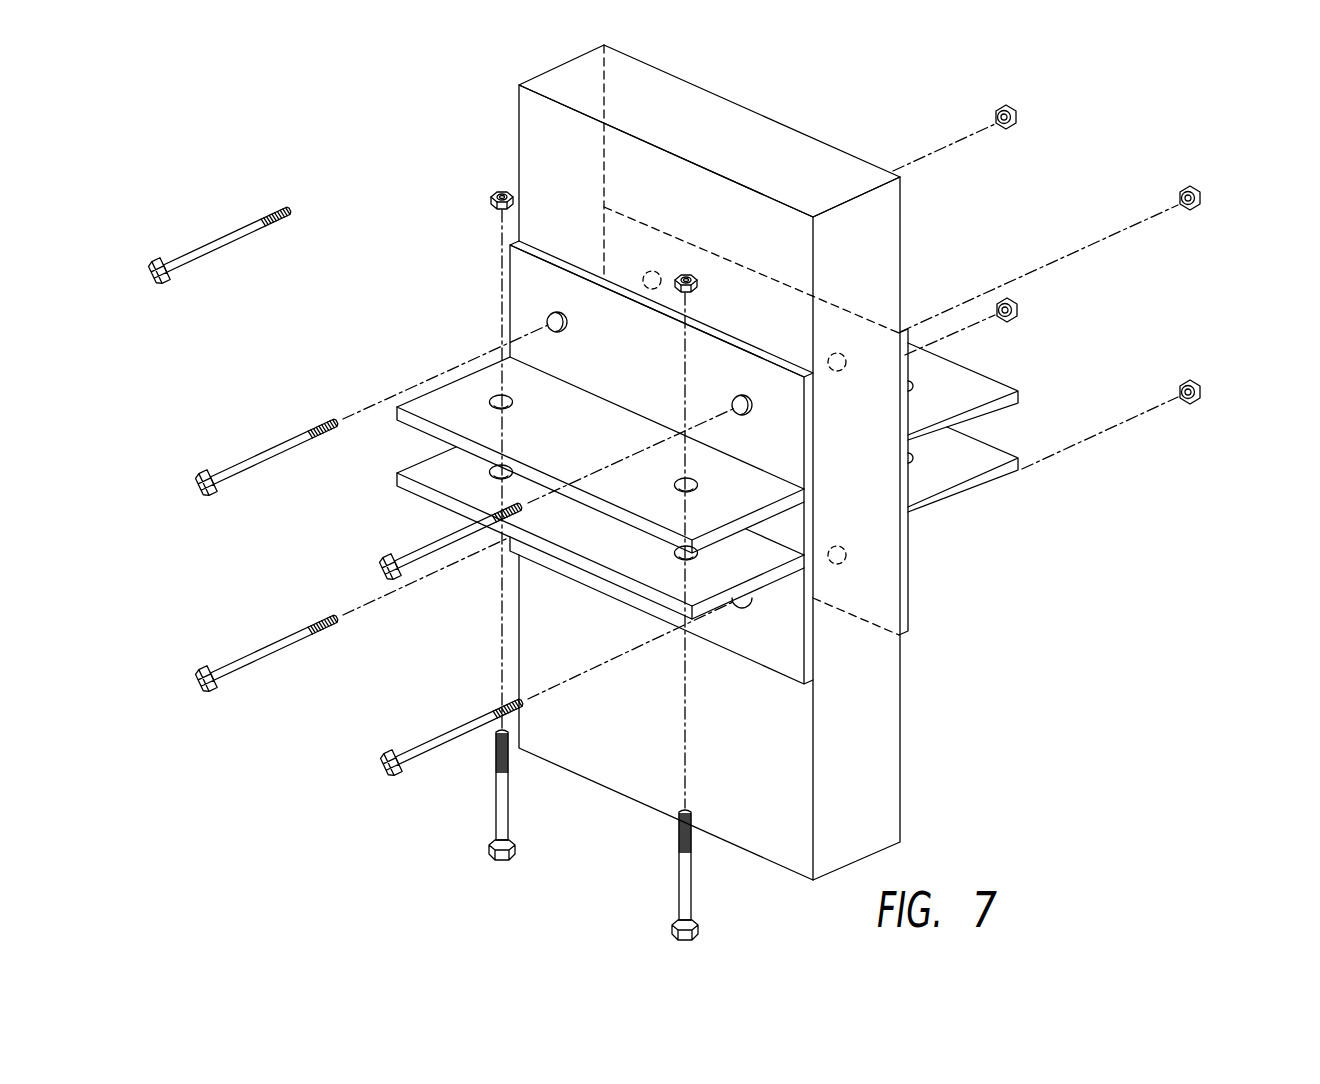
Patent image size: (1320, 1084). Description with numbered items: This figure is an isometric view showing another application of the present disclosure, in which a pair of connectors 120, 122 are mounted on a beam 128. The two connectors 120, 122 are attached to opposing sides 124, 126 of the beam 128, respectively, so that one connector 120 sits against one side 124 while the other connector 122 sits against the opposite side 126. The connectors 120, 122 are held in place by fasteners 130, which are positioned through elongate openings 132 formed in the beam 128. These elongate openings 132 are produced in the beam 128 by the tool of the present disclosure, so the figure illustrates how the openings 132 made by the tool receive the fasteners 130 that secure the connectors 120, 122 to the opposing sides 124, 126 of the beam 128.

The connector 120 is at (450, 372).
The connector 122 is at (965, 500).
The side 124 is at (537, 135).
The side 126 is at (868, 719).
The beam 128 is at (753, 141).
The fasteners 130 is at (455, 718).
The elongate openings 132 is at (860, 584).